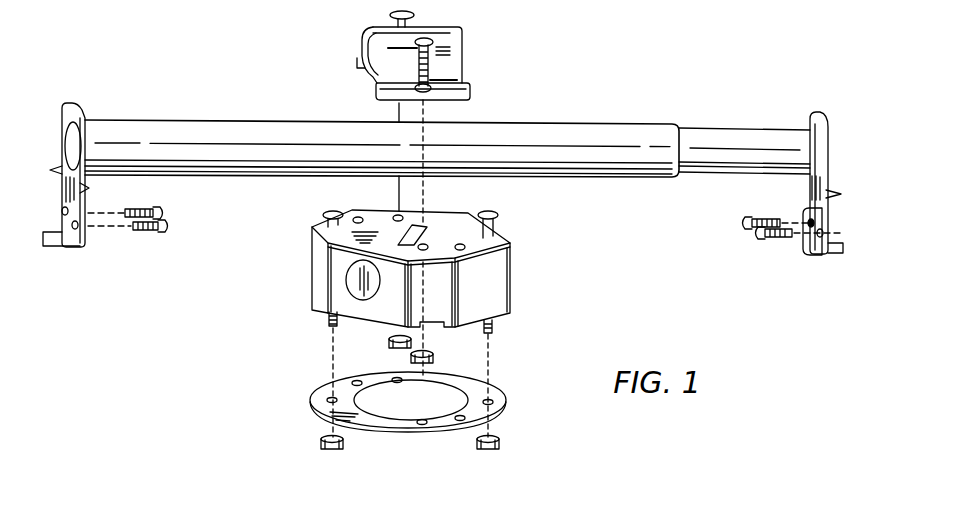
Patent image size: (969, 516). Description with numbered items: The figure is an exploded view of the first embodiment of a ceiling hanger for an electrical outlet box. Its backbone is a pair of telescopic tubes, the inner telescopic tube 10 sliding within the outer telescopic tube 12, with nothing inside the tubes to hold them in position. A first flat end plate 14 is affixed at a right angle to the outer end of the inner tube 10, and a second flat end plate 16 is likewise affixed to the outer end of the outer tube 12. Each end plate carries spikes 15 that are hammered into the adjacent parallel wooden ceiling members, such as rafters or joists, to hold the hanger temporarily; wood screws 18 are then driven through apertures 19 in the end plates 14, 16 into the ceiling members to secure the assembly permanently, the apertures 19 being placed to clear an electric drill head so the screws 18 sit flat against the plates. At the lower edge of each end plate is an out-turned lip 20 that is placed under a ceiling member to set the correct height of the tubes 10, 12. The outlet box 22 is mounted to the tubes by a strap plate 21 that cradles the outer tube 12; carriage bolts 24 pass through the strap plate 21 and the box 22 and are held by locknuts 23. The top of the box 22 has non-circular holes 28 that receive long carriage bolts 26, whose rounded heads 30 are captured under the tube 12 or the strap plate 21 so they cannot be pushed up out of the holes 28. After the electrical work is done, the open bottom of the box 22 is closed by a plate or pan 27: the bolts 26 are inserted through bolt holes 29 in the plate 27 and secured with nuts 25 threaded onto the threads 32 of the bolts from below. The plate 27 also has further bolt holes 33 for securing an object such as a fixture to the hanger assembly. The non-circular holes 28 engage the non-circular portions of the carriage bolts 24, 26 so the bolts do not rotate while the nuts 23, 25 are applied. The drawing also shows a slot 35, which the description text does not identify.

The inner telescopic tube 10 is at (724, 148).
The outer telescopic tube 12 is at (636, 148).
The first flat end plate 14 is at (818, 244).
The spikes 15 is at (61, 170).
The second flat end plate 16 is at (84, 241).
The wood screws 18 is at (166, 229).
The apertures 19 is at (73, 222).
The out-turned lip 20 is at (50, 247).
The strap plate 21 is at (455, 62).
The outlet box 22 is at (494, 250).
The locknuts 23 is at (413, 358).
The carriage bolts 24 is at (431, 36).
The nuts 25 is at (320, 446).
The long carriage bolts 26 is at (497, 218).
The plate or pan 27 is at (474, 383).
The non-circular holes 28 is at (359, 218).
The bolt holes 29 is at (329, 400).
The rounded heads 30 is at (390, 15).
The threads 32 is at (392, 86).
The bolt holes 33 is at (428, 423).
The slot 35 is at (421, 228).